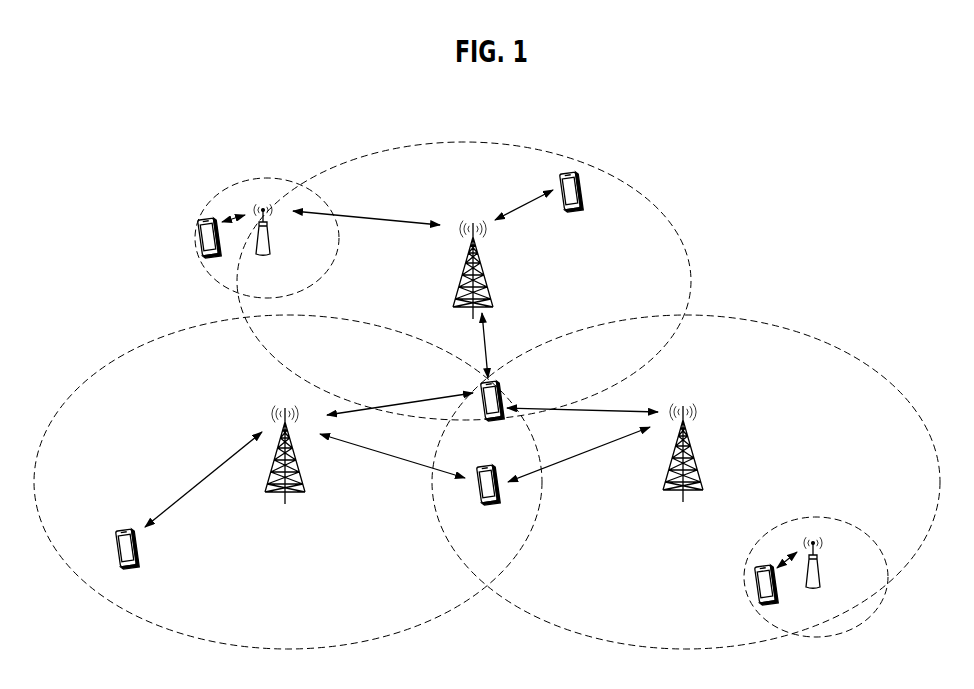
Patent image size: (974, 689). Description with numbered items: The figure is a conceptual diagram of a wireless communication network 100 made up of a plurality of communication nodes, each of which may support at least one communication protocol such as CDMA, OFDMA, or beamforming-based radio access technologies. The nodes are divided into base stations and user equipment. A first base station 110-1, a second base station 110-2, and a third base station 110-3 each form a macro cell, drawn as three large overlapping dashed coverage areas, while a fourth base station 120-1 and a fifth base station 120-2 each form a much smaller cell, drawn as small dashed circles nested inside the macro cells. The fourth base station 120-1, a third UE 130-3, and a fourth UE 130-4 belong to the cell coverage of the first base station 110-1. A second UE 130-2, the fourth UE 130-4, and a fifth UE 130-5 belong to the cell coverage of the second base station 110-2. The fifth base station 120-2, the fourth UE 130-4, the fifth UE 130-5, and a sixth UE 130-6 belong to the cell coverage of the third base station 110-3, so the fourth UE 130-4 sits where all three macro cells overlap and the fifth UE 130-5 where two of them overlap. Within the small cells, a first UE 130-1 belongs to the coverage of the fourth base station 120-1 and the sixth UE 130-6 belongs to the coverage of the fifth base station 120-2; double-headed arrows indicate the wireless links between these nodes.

The wireless communication network 100 is at (478, 121).
The first base station 110-1 is at (484, 270).
The second base station 110-2 is at (285, 496).
The third base station 110-3 is at (694, 455).
The fourth base station 120-1 is at (271, 240).
The fifth base station 120-2 is at (823, 568).
The first UE 130-1 is at (199, 237).
The second UE 130-2 is at (136, 547).
The third UE 130-3 is at (578, 192).
The fourth UE 130-4 is at (500, 382).
The fifth UE 130-5 is at (512, 446).
The sixth UE 130-6 is at (757, 582).